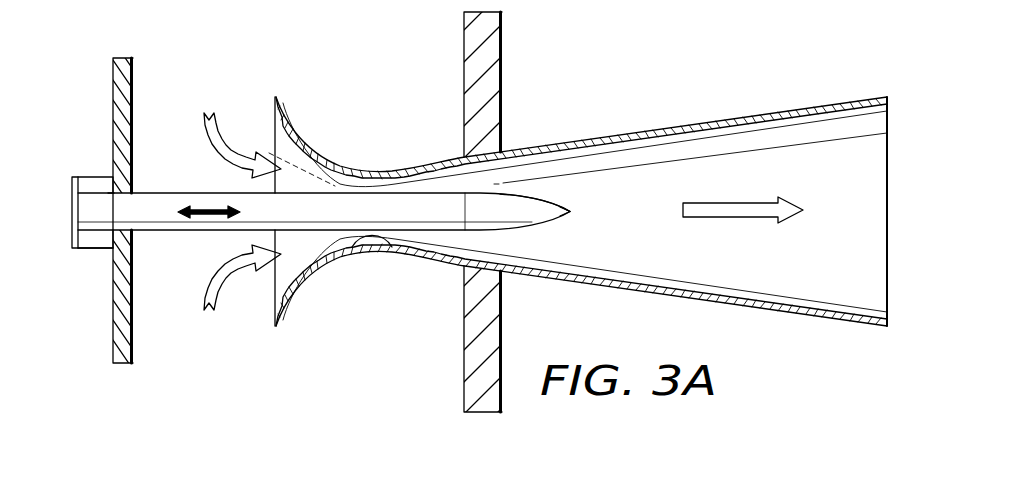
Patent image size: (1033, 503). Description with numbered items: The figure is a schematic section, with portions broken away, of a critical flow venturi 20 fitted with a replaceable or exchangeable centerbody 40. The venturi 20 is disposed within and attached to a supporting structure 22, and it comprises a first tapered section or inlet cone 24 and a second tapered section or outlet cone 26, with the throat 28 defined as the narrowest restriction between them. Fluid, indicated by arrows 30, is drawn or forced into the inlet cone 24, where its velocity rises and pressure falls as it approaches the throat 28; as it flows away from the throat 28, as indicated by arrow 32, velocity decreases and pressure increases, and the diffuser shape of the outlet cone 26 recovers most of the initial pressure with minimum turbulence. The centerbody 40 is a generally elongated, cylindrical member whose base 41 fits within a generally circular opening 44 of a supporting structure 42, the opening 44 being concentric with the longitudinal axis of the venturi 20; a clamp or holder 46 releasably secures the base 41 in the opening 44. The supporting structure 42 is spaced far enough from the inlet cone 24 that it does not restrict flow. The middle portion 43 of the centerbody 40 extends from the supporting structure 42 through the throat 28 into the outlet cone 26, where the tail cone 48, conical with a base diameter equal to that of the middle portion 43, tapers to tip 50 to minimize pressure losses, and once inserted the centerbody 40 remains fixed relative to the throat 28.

The critical flow venturi 20 is at (658, 104).
The supporting structure 22 is at (466, 40).
The first tapered section or inlet cone 24 is at (308, 105).
The second tapered section or outlet cone 26 is at (830, 92).
The throat 28 is at (355, 258).
The arrows indicating fluid 30 is at (203, 113).
The arrow indicating fluid flow away from throat 32 is at (747, 218).
The centerbody 40 is at (167, 183).
The base 41 is at (82, 210).
The supporting structure 42 is at (113, 62).
The middle portion 43 is at (168, 223).
The opening 44 is at (112, 196).
The clamp or holder 46 is at (95, 250).
The tail cone 48 is at (541, 205).
The tip 50 is at (572, 212).